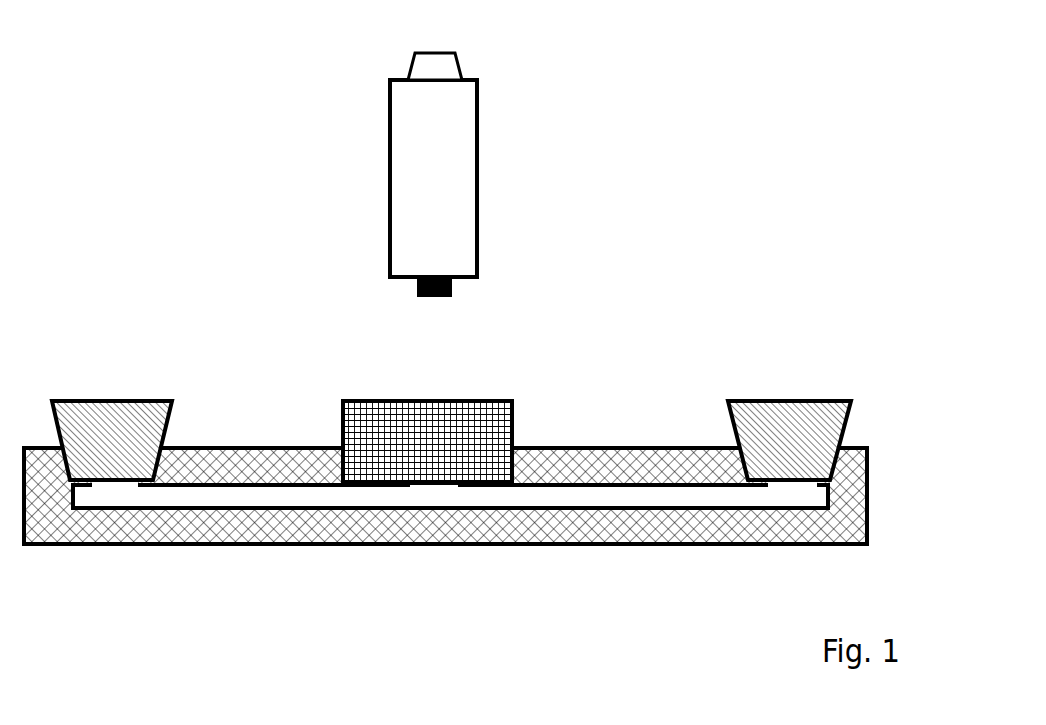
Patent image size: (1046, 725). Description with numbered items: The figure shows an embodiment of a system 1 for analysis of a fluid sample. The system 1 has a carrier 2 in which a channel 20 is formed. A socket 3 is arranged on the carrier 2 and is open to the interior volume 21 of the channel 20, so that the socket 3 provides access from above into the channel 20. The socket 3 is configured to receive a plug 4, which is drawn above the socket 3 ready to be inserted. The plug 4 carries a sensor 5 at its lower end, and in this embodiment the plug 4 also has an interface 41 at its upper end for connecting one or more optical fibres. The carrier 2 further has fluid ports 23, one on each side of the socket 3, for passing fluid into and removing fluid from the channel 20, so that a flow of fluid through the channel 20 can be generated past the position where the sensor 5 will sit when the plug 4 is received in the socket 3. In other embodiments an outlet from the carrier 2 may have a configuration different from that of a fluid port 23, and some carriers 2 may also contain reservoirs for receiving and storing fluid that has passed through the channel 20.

The system 1 is at (167, 155).
The carrier 2 is at (255, 447).
The channel 20 is at (188, 503).
The interior volume 21 is at (277, 492).
The fluid port 23 is at (118, 401).
The socket 3 is at (512, 418).
The plug 4 is at (478, 175).
The interface 41 is at (455, 58).
The sensor 5 is at (452, 287).